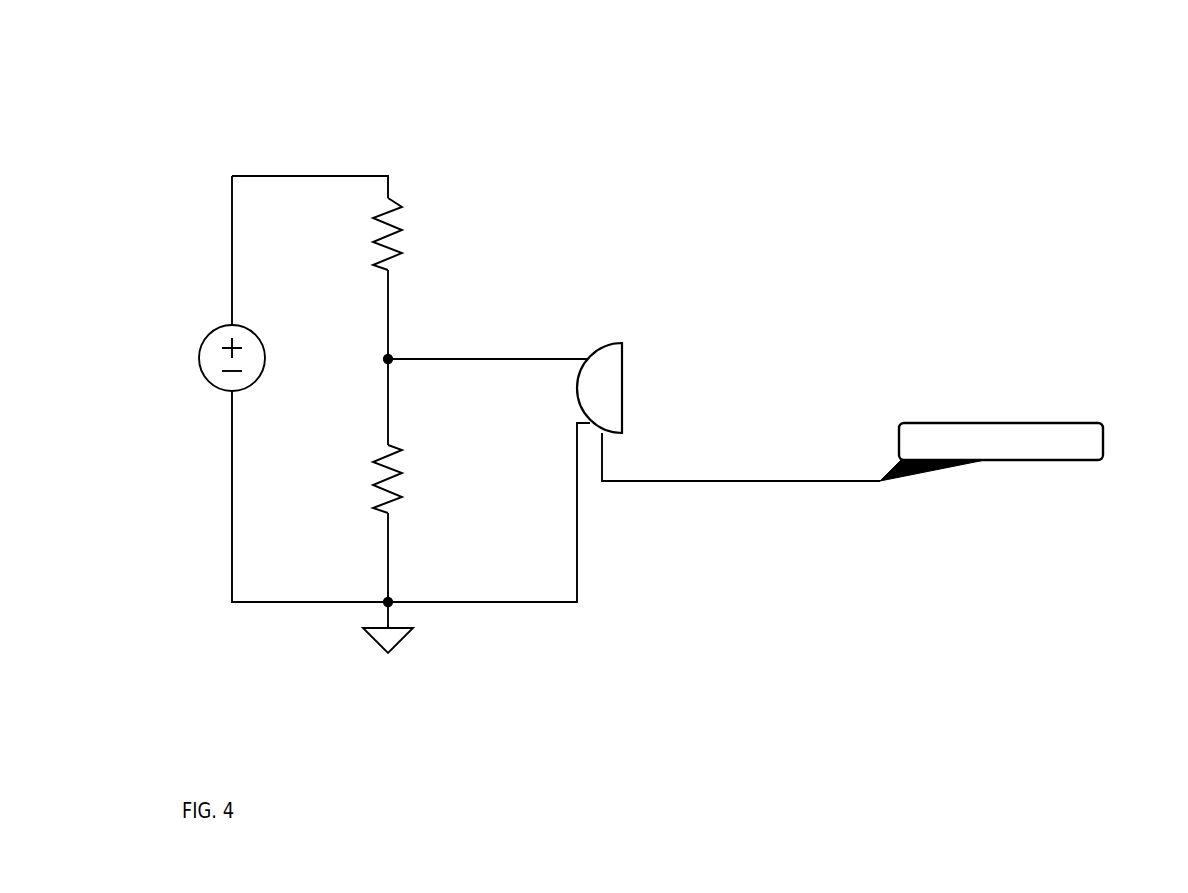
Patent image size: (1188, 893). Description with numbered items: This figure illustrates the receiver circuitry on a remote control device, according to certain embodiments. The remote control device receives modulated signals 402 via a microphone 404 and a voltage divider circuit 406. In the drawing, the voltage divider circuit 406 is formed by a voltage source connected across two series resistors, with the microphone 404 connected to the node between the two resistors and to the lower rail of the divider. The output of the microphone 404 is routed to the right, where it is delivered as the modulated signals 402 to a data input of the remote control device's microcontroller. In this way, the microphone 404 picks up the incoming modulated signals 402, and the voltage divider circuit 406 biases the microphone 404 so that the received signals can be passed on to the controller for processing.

The modulated signals 402 is at (1087, 422).
The microphone 404 is at (626, 348).
The voltage divider circuit 406 is at (613, 106).